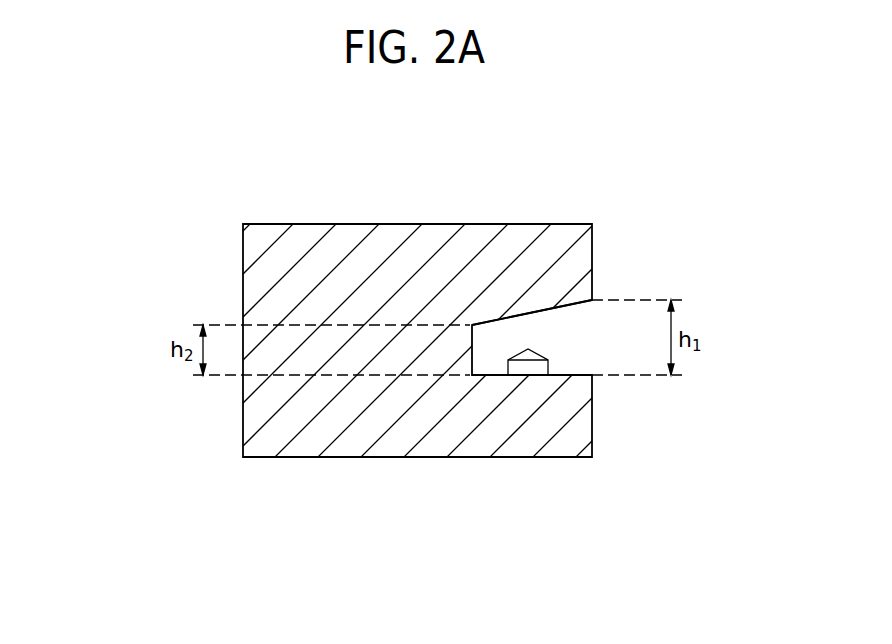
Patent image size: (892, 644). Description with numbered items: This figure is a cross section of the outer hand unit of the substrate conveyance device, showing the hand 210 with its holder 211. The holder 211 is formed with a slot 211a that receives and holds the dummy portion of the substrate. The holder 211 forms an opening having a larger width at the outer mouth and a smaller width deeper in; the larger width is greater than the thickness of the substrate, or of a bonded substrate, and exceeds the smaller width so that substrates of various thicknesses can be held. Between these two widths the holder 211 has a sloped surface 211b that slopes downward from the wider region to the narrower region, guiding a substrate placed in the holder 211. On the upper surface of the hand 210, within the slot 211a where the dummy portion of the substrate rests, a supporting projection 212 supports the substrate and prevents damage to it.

The hand 210 is at (243, 259).
The holder 211 is at (408, 255).
The slot 211a is at (575, 316).
The sloped surface 211b is at (548, 317).
The supporting projection 212 is at (527, 367).